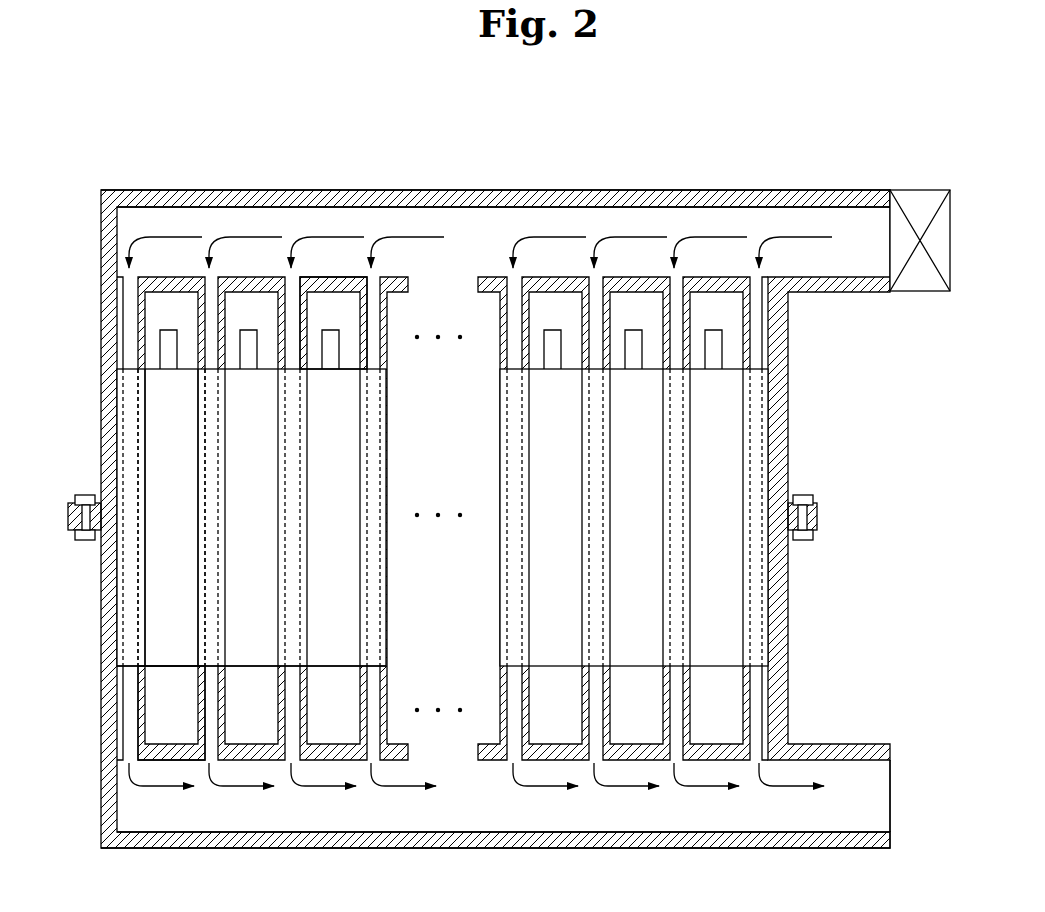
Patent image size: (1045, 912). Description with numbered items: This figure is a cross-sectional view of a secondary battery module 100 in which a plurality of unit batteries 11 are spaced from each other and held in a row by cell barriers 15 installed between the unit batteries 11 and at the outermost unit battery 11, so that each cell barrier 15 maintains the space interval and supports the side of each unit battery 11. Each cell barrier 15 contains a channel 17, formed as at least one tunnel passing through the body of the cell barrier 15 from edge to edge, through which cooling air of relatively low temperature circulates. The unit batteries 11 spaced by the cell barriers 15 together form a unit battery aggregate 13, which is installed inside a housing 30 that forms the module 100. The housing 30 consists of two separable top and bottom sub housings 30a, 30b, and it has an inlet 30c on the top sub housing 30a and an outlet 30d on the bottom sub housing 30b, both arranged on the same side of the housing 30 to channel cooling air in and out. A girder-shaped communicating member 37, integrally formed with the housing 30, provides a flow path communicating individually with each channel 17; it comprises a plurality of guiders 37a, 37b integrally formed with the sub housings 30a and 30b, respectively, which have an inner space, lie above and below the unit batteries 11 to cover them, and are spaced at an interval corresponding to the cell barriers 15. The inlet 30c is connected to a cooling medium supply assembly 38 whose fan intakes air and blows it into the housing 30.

The secondary battery module 100 is at (540, 104).
The housing 30 is at (104, 186).
The top sub housing 30a is at (225, 192).
The bottom sub housing 30b is at (390, 843).
The inlet 30c is at (890, 233).
The outlet 30d is at (890, 805).
The cooling medium supply assembly 38 is at (951, 237).
The communicating member 37 is at (186, 323).
The guider 37a is at (307, 318).
The guider 37b is at (197, 708).
The unit battery 11 is at (155, 538).
The unit battery aggregate 13 is at (166, 673).
The cell barrier 15 is at (200, 598).
The channel 17 is at (190, 445).